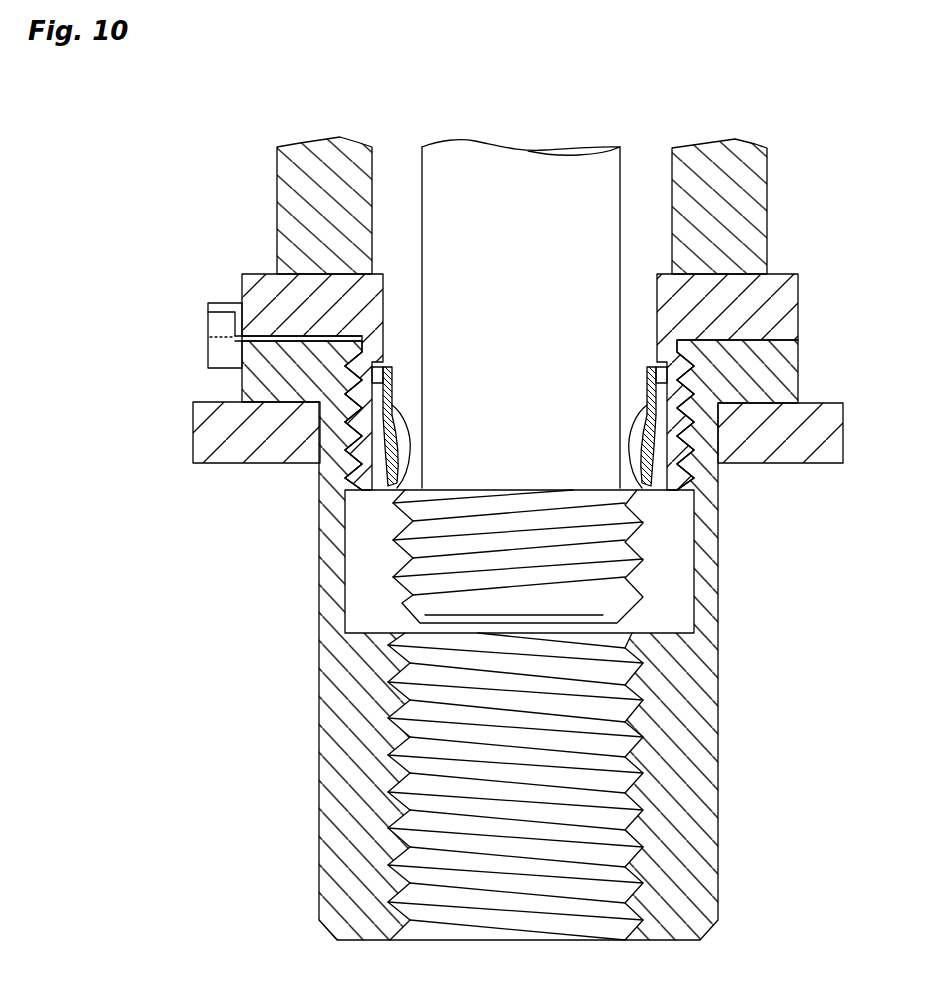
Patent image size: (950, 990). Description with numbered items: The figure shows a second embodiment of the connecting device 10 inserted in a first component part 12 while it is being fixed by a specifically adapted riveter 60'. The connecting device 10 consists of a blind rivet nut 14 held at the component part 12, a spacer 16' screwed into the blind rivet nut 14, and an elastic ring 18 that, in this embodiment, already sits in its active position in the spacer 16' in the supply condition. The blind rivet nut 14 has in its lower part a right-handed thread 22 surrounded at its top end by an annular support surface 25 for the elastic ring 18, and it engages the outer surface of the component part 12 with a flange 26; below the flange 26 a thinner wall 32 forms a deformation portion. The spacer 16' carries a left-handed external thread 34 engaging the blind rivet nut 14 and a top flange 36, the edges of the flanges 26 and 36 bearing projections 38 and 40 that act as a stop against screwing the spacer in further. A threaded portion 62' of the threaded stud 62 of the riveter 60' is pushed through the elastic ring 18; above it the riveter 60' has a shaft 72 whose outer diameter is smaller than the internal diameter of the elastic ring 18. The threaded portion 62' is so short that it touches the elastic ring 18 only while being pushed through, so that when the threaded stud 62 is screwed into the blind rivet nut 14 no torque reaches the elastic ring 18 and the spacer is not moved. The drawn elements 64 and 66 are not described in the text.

The connecting device 10 is at (250, 722).
The first component part 12 is at (200, 432).
The blind rivet nut 14 is at (716, 770).
The spacer 16' is at (538, 280).
The elastic ring 18 is at (655, 378).
The right-handed thread 22 is at (575, 908).
The annular support surface 25 is at (372, 626).
The flange 26 is at (792, 360).
The thinner wall 32 is at (705, 537).
The external thread 34 is at (690, 460).
The flange 36 is at (794, 308).
The projection 38 is at (215, 353).
The projection 40 is at (208, 305).
The riveter 60' is at (732, 84).
The threaded stud 62 is at (477, 281).
The threaded portion 62' is at (518, 513).
The tool sleeve 64 is at (298, 152).
The withdrawal direction 66 is at (523, 72).
The shaft 72 is at (578, 210).